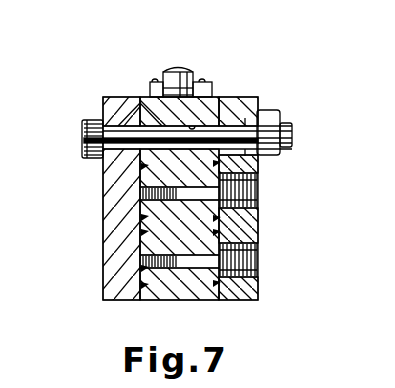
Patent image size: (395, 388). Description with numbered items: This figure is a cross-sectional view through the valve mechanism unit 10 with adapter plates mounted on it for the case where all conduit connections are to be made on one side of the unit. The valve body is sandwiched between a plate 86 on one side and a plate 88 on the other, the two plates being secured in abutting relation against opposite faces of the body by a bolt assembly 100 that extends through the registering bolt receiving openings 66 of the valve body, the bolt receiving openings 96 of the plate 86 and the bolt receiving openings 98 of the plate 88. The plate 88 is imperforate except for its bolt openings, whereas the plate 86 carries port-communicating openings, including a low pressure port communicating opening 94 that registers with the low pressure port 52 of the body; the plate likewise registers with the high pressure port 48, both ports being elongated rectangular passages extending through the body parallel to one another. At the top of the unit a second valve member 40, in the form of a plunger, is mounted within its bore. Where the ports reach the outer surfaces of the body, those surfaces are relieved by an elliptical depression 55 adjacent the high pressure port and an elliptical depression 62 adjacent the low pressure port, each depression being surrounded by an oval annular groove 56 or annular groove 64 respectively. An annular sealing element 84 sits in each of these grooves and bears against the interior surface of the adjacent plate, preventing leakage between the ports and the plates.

The valve mechanism unit 10 is at (189, 57).
The second valve member 40 is at (171, 74).
The high pressure port 48 is at (140, 188).
The low pressure port 52 is at (175, 266).
The elliptical depression 55 is at (258, 190).
The annular groove 56 is at (142, 167).
The elliptical depression 62 is at (142, 268).
The annular groove 64 is at (124, 302).
The bolt receiving openings 66 is at (208, 103).
The annular sealing element 84 is at (142, 217).
The plate 86 is at (238, 104).
The plate 88 is at (135, 105).
The low pressure port communicating opening 94 is at (243, 270).
The bolt receiving openings 96 is at (246, 121).
The bolt receiving openings 98 is at (83, 157).
The bolt assembly 100 is at (127, 128).